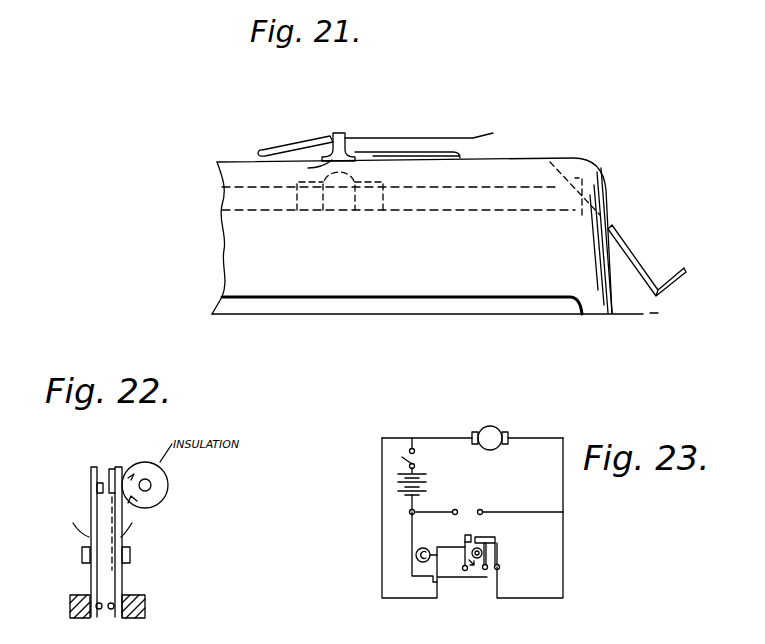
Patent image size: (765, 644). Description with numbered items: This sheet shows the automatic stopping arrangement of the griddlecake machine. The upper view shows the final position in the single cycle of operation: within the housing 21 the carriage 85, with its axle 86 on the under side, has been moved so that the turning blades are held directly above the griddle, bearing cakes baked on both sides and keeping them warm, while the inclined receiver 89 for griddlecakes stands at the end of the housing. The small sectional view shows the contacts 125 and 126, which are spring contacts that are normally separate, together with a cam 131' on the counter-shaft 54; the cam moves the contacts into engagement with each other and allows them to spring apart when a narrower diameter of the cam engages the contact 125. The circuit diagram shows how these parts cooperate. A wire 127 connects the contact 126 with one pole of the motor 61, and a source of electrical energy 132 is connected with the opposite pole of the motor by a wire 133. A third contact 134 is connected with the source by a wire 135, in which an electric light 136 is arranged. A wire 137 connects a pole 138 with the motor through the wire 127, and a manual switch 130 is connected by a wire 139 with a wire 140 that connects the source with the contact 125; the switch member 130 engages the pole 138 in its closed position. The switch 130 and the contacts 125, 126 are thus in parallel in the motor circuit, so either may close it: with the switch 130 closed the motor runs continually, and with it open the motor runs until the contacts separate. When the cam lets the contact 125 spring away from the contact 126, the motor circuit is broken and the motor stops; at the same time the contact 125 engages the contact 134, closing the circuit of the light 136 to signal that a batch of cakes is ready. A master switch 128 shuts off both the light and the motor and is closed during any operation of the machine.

In FIG. 21, the housing 21 is at (237, 247).
In FIG. 21, the carriage 85 is at (301, 173).
In FIG. 21, the axle 86 is at (272, 152).
In FIG. 21, the inclined receiver 89 is at (618, 245).
In FIG. 22, the contact 125 is at (120, 467).
In FIG. 23, the contact 125 is at (480, 533).
In FIG. 22, the contact 126 is at (98, 467).
In FIG. 23, the contact 126 is at (495, 537).
In FIG. 22, the wire 127 is at (88, 538).
In FIG. 23, the wire 127 is at (565, 549).
In FIG. 22, the master switch 128 is at (132, 533).
In FIG. 23, the master switch 128 is at (405, 462).
In FIG. 22, the counter-shaft 54 is at (152, 485).
In FIG. 22, the cam 131' is at (191, 508).
In FIG. 23, the cam 131' is at (493, 599).
In FIG. 23, the wire 133 is at (440, 437).
In FIG. 23, the motor 61 is at (497, 428).
In FIG. 23, the source of electrical energy 132 is at (398, 485).
In FIG. 23, the wire 139 is at (407, 506).
In FIG. 23, the manual switch 130 is at (456, 509).
In FIG. 23, the pole 138 is at (482, 509).
In FIG. 23, the wire 137 is at (543, 512).
In FIG. 23, the wire 140 is at (410, 569).
In FIG. 23, the electric light 136 is at (416, 556).
In FIG. 23, the third contact 134 is at (465, 539).
In FIG. 23, the wire 135 is at (417, 599).